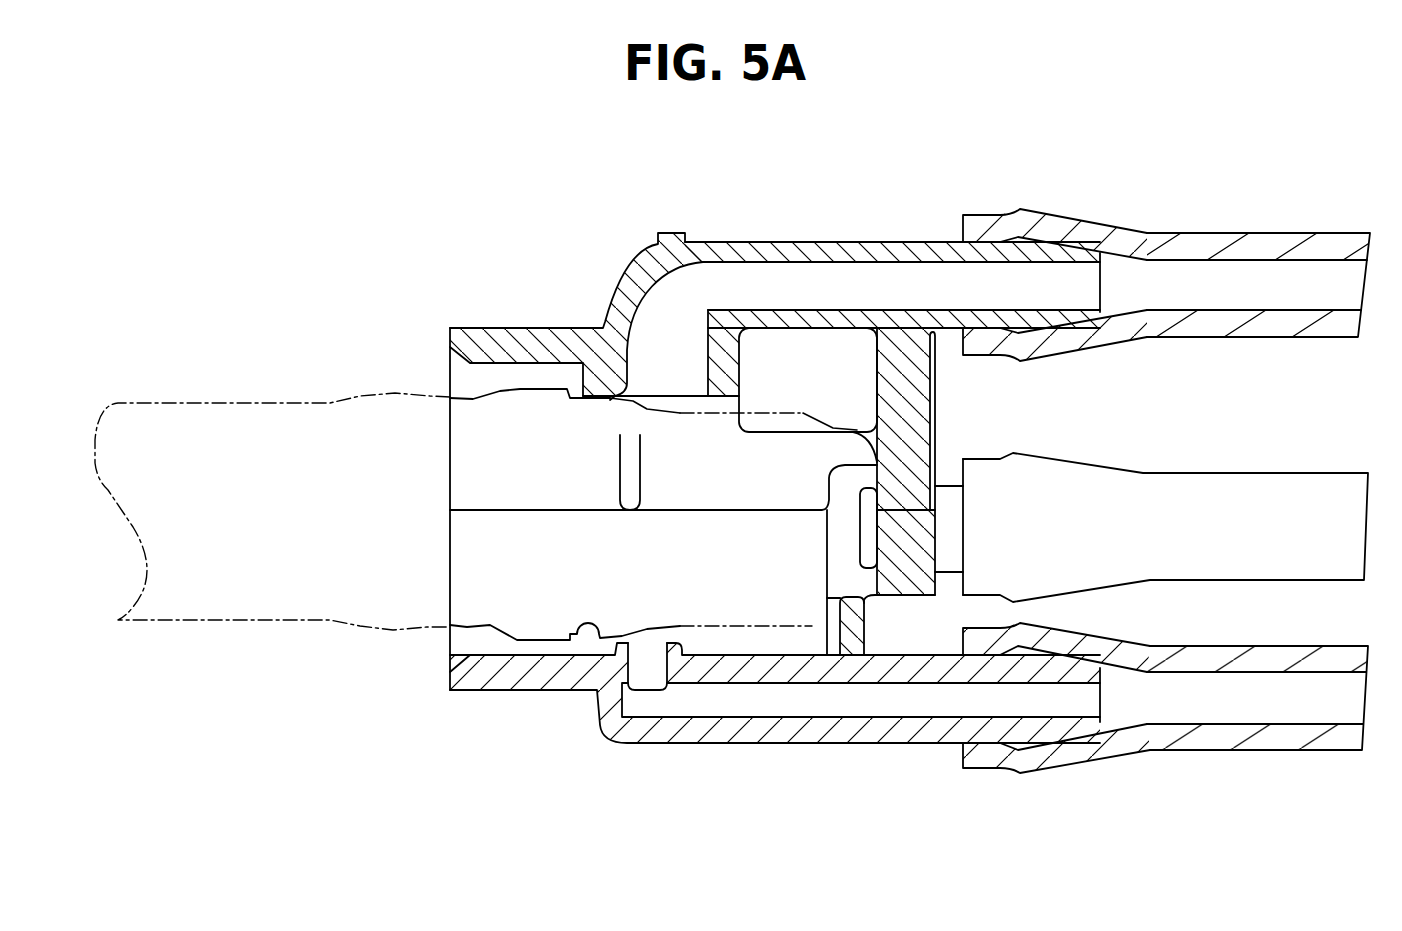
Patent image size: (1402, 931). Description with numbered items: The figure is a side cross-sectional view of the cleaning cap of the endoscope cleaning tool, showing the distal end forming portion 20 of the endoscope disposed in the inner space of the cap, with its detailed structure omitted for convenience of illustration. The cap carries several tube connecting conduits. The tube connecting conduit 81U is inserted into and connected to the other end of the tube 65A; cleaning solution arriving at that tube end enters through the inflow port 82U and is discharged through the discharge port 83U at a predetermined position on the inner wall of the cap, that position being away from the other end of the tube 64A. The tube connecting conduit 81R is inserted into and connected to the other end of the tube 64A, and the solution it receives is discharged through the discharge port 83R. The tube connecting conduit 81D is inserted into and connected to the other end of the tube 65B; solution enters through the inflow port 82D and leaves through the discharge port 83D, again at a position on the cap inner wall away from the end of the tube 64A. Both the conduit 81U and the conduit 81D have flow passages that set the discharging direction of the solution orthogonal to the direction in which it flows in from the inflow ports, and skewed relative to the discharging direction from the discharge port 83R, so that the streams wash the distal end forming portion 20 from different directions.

The distal end forming portion 20 is at (762, 391).
The discharge port 83U is at (665, 384).
The tube connecting conduit 81U is at (890, 230).
The inflow port 82U is at (1110, 284).
The tube 65A is at (1223, 247).
The tube connecting conduit 81R is at (950, 493).
The tube 64A is at (1221, 490).
The discharge port 83R is at (878, 452).
The discharge port 83D is at (648, 662).
The tube connecting conduit 81D is at (895, 752).
The inflow port 82D is at (1110, 697).
The tube 65B is at (1223, 737).